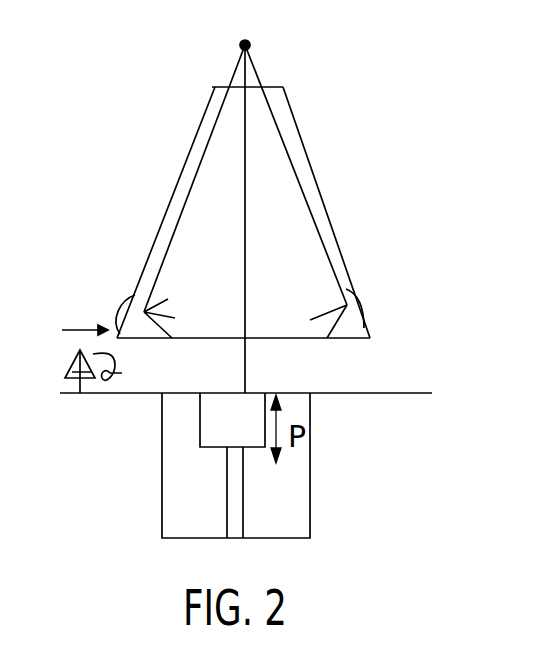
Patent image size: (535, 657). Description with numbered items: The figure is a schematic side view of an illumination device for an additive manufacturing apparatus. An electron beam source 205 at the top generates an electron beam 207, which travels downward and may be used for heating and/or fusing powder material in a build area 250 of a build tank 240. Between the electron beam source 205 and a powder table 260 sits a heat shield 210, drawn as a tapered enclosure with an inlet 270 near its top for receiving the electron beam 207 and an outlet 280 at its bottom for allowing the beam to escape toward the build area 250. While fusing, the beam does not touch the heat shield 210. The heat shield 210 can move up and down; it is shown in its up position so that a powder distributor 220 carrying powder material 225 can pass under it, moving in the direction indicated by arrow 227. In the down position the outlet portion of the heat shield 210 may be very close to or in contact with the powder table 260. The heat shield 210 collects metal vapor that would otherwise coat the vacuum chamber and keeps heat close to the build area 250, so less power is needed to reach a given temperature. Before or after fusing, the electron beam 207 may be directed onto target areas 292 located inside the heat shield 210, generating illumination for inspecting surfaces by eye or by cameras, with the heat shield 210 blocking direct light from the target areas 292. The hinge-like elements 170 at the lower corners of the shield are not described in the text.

The hinge 170 is at (175, 318).
The electron beam source 205 is at (249, 42).
The electron beam 207 is at (241, 148).
The heat shield 210 is at (315, 180).
The powder distributor 220 is at (66, 372).
The powder material 225 is at (104, 383).
The arrow 227 is at (78, 330).
The build tank 240 is at (310, 496).
The build area 250 is at (194, 398).
The powder table 260 is at (393, 393).
The inlet 270 is at (224, 87).
The outlet 280 is at (315, 338).
The target areas 292 is at (347, 305).